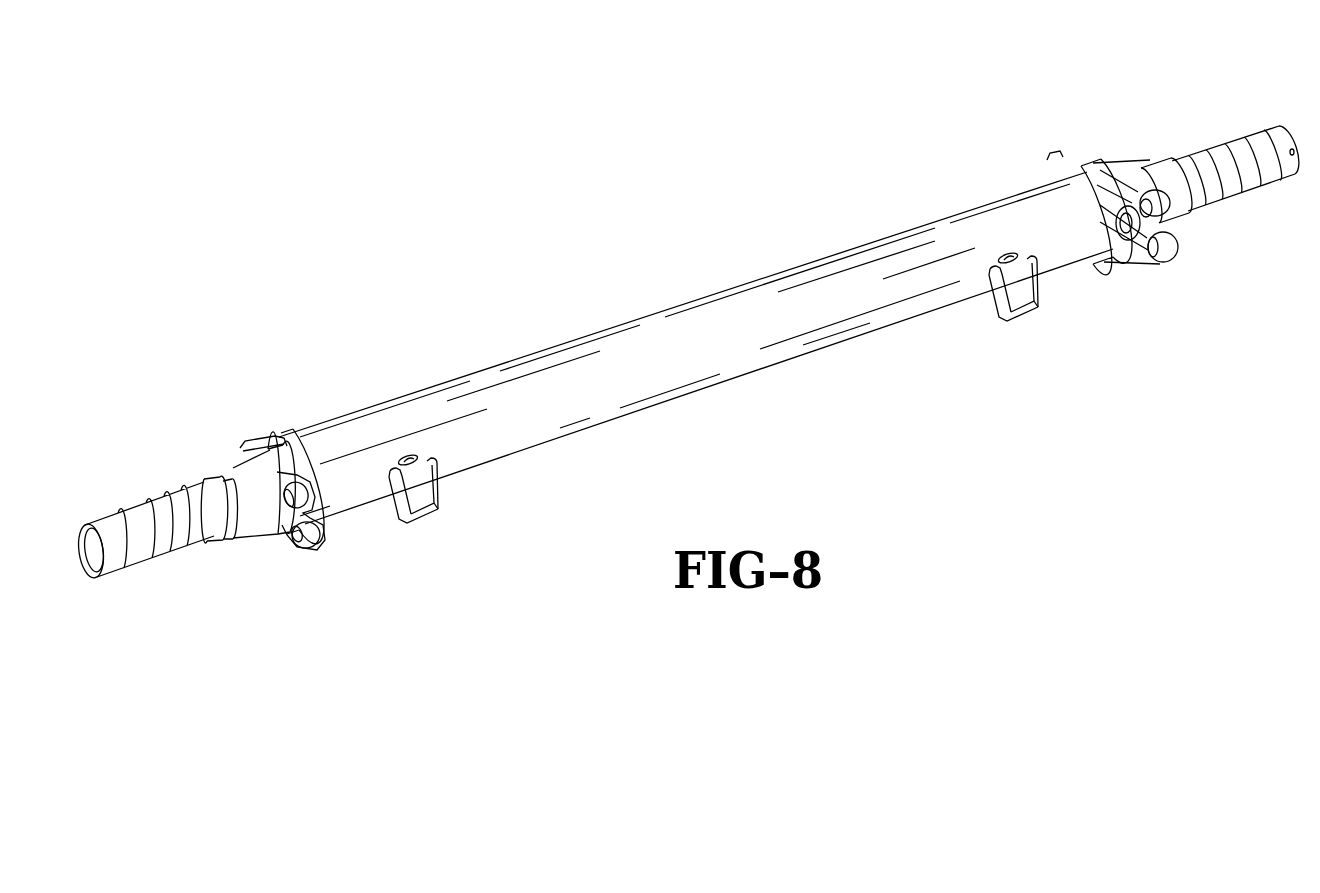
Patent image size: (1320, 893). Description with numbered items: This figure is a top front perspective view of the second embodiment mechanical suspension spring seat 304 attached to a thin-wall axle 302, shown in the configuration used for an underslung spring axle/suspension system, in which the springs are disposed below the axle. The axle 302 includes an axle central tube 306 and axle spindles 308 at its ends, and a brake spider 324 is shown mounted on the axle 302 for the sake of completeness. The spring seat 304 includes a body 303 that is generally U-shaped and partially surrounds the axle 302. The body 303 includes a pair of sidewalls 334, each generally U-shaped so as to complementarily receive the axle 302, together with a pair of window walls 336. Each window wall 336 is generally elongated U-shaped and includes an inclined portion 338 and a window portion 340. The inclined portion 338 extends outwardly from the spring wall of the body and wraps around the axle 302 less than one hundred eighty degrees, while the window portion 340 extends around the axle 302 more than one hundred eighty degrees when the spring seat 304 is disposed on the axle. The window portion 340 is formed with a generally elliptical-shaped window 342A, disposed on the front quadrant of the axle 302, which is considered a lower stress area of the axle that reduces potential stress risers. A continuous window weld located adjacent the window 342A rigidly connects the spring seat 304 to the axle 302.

The thin-wall axle 302 is at (680, 296).
The body 303 is at (413, 531).
The mechanical suspension spring seat 304 is at (764, 378).
The axle central tube 306 is at (723, 383).
The axle spindles 308 is at (170, 553).
The brake spider 324 is at (258, 437).
The sidewalls 334 is at (395, 500).
The window walls 336 is at (437, 448).
The inclined portion 338 is at (417, 487).
The window portion 340 is at (410, 457).
The window 342A is at (412, 462).